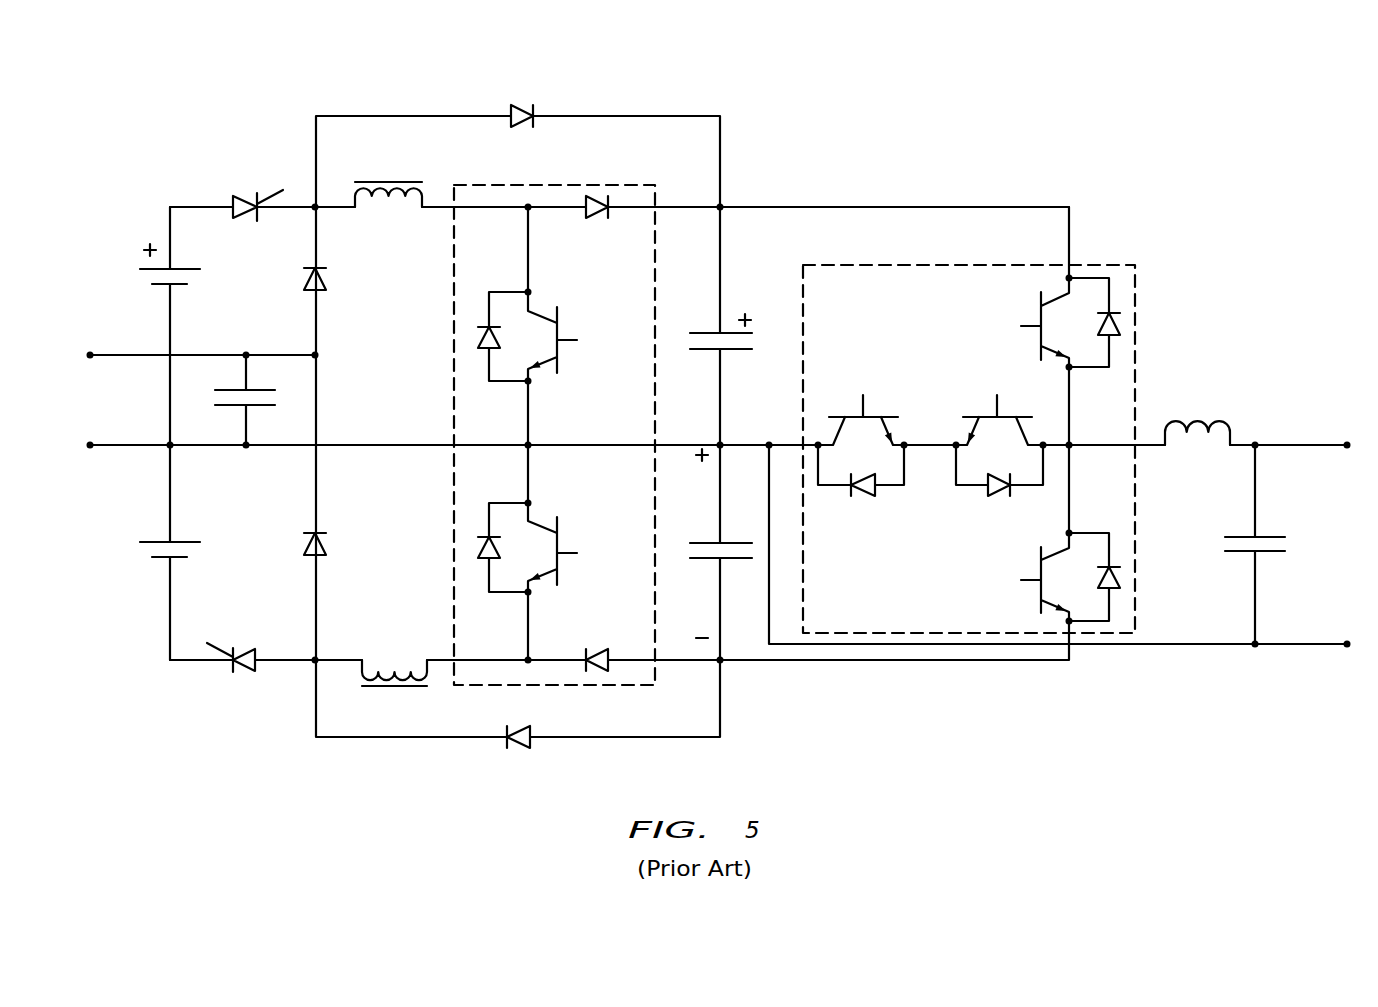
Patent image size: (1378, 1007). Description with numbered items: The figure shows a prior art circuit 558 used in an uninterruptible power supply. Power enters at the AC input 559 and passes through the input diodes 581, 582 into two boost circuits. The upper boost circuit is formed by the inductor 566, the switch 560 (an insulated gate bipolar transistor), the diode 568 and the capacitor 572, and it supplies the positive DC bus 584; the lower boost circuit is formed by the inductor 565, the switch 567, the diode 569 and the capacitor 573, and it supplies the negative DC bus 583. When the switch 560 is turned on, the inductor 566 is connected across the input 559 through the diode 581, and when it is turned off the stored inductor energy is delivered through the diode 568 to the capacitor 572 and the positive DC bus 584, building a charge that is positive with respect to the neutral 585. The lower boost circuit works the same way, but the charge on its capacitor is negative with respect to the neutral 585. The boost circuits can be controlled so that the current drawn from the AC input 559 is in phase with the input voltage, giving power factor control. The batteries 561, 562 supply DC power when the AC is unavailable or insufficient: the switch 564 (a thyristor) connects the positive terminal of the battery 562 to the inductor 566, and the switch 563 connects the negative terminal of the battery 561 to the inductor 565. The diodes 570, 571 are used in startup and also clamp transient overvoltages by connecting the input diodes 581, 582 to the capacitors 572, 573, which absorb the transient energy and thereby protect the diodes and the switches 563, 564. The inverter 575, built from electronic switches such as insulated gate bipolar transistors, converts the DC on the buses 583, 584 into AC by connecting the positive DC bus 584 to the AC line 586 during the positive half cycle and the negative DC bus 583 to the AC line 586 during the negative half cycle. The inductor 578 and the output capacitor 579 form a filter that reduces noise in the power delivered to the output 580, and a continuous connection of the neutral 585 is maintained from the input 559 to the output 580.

The circuit 558 is at (130, 155).
The AC input 559 is at (92, 358).
The switch 560 is at (560, 325).
The battery 561 is at (152, 552).
The battery 562 is at (147, 278).
The switch 563 is at (248, 670).
The switch 564 is at (235, 200).
The inductor 565 is at (427, 684).
The inductor 566 is at (422, 188).
The switch 567 is at (560, 538).
The diode 568 is at (598, 221).
The diode 569 is at (604, 649).
The diode 570 is at (524, 104).
The diode 571 is at (518, 749).
The capacitor 572 is at (700, 342).
The capacitor 573 is at (698, 557).
The inverter 575 is at (1137, 286).
The inductor 578 is at (1210, 422).
The output capacitor 579 is at (1284, 543).
The output 580 is at (1345, 448).
The input diode 581 is at (322, 290).
The input diode 582 is at (322, 556).
The negative DC bus 583 is at (880, 662).
The positive DC bus 584 is at (868, 207).
The neutral 585 is at (1278, 646).
The AC line 586 is at (1288, 444).